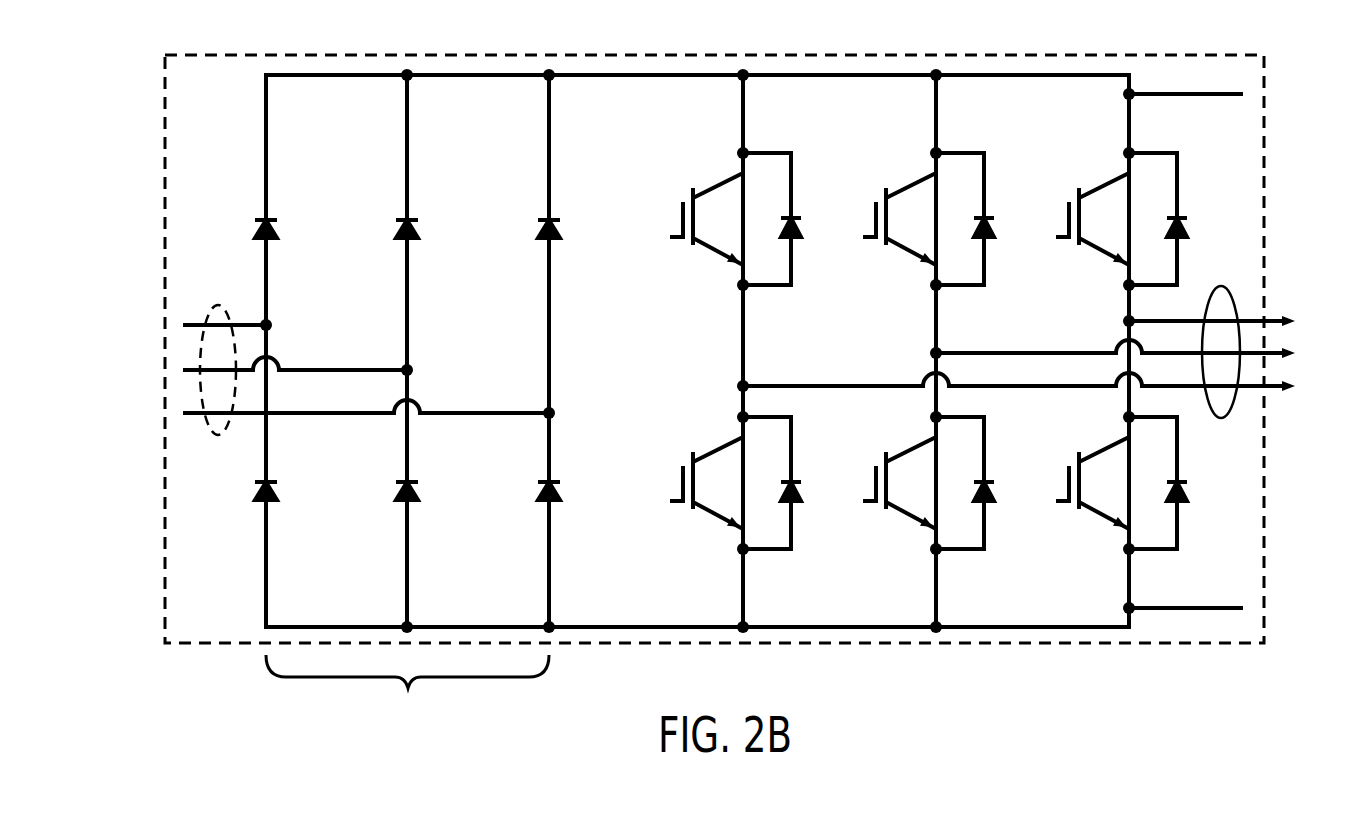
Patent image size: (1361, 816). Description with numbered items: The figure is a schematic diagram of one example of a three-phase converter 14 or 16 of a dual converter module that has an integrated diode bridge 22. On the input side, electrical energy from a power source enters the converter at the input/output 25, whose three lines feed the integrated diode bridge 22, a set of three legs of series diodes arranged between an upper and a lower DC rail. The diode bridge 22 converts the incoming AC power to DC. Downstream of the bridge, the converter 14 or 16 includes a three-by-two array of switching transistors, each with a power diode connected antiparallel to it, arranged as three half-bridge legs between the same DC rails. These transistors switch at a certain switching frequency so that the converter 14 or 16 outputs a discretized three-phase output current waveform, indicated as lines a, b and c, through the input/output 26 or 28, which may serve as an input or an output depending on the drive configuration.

The converter 14 is at (714, 376).
The converter 16 is at (1184, 660).
The integrated diode bridge 22 is at (408, 688).
The input/output (I/O) 25 is at (205, 310).
The input/output (I/O) 26 is at (1033, 304).
The input/output (I/O) 28 is at (1229, 290).